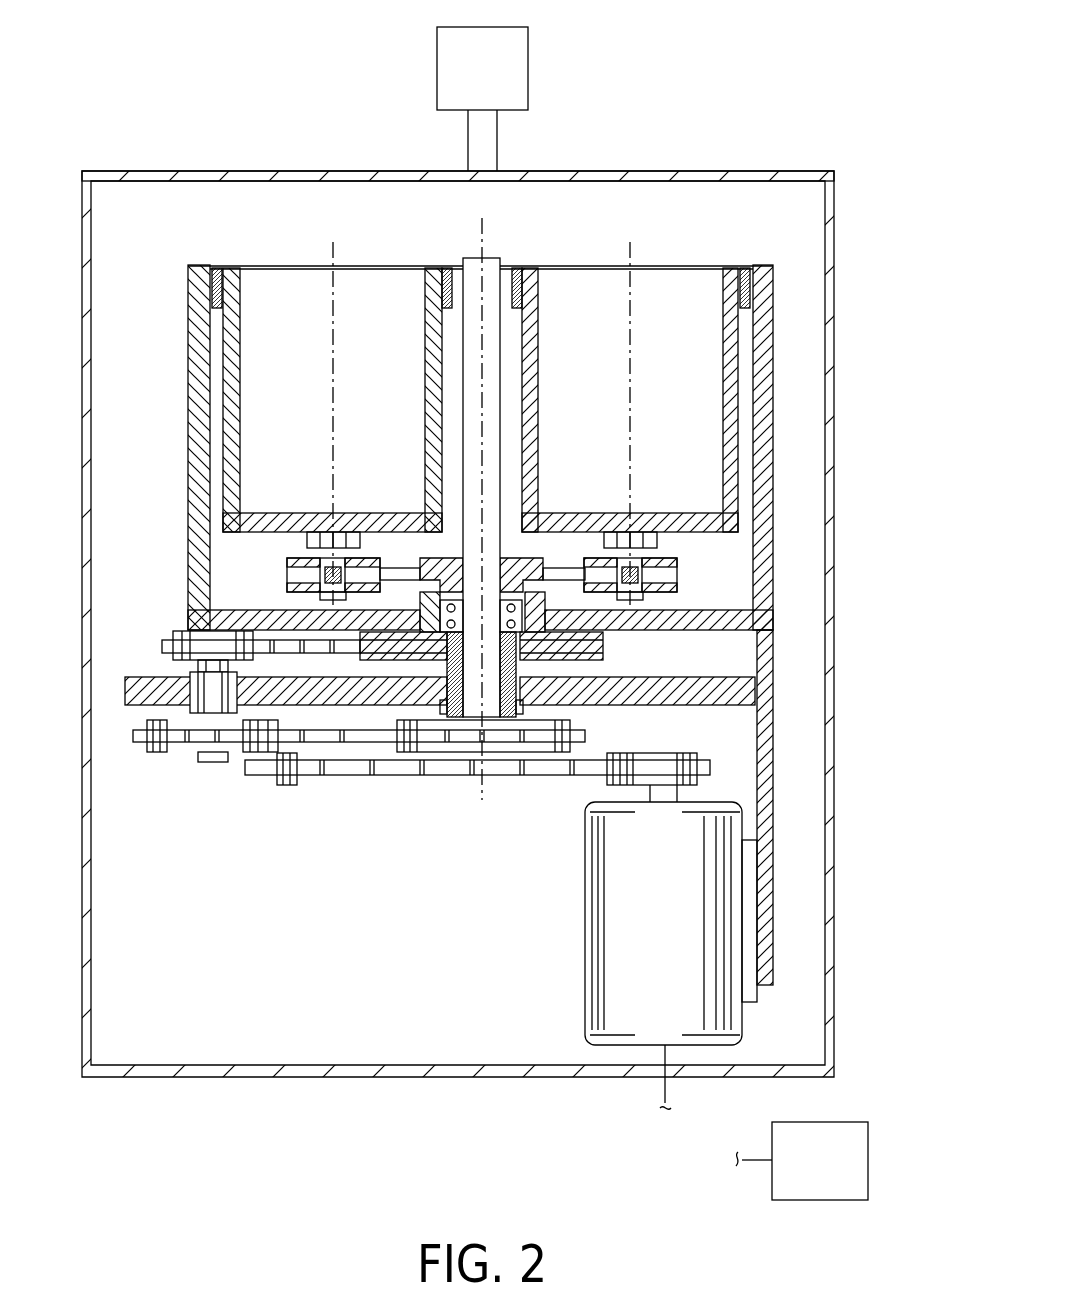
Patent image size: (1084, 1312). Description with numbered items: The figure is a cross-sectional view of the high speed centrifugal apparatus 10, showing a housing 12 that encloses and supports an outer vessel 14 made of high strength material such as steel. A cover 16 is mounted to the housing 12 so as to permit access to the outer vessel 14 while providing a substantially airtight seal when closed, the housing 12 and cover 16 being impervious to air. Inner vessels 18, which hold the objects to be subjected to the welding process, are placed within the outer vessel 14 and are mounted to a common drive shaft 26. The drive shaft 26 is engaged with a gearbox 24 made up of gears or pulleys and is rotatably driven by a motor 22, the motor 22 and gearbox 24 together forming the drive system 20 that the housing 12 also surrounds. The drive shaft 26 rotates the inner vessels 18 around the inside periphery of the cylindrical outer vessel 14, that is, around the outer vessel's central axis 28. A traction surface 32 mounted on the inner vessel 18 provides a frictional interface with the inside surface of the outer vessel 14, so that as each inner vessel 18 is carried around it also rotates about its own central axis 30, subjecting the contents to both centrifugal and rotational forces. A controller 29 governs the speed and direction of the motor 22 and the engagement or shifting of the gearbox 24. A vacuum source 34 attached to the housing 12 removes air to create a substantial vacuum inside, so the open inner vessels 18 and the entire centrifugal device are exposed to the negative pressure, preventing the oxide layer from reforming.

The high speed centrifugal apparatus 10 is at (517, 562).
The housing 12 is at (834, 478).
The outer vessel 14 is at (776, 390).
The cover 16 is at (172, 171).
The inner vessel 18 is at (728, 291).
The drive system 20 is at (396, 972).
The motor 22 is at (620, 930).
The gearbox 24 is at (337, 808).
The drive shaft 26 is at (472, 720).
The central axis 28 is at (482, 232).
The controller 29 is at (843, 1160).
The central axis 30 is at (333, 246).
The traction surface 32 is at (217, 268).
The vacuum source 34 is at (528, 57).